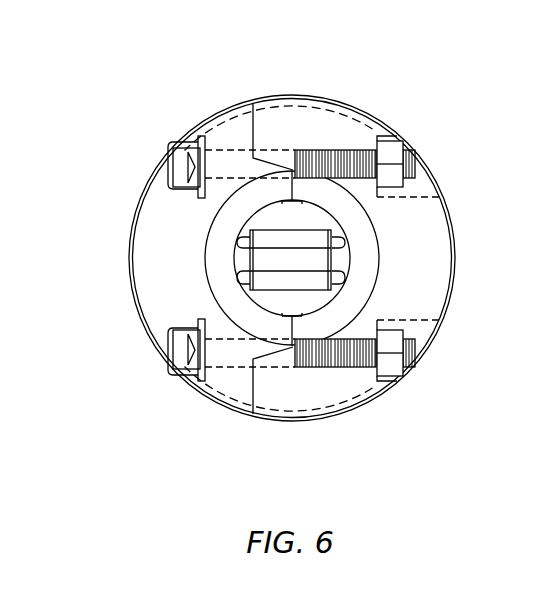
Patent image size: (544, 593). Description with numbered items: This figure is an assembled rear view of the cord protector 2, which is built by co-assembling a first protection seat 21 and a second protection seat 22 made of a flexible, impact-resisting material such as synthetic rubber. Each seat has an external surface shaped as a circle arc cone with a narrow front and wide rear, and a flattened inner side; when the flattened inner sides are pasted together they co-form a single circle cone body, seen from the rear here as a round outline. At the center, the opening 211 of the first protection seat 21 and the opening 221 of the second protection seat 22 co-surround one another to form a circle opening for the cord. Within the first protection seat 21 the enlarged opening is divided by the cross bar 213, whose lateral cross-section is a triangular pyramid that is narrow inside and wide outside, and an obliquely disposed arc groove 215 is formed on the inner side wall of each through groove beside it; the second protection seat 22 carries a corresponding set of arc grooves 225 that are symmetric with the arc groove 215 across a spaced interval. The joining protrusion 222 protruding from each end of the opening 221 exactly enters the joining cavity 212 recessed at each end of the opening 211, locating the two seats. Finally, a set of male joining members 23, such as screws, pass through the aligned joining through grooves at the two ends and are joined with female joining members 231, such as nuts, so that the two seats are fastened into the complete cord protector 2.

The cord protector 2 is at (293, 261).
The first protection seat 21 is at (415, 302).
The opening 211 is at (307, 219).
The joining cavity 212 is at (275, 165).
The cross bar 213 is at (312, 262).
The arc groove 215 is at (335, 238).
The second protection seat 22 is at (167, 300).
The opening 221 is at (277, 218).
The joining protrusion 222 is at (258, 167).
The arc groove 225 is at (248, 240).
The male joining member 23 is at (232, 162).
The female joining member 231 is at (389, 153).